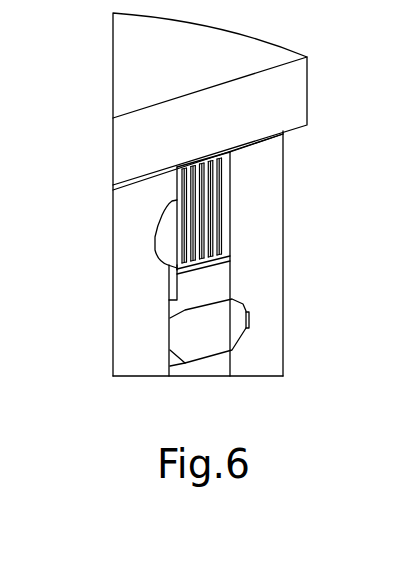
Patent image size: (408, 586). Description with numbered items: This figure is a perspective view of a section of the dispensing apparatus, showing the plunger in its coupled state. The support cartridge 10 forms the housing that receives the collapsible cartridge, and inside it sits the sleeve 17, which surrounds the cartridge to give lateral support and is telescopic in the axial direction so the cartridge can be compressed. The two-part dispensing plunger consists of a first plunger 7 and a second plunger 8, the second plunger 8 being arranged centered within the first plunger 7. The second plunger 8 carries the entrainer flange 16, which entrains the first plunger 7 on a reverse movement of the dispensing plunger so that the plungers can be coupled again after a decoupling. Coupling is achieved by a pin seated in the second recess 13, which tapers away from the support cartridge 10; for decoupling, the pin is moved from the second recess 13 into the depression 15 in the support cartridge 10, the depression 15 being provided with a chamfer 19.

The first plunger 7 is at (208, 376).
The second plunger 8 is at (120, 283).
The support cartridge 10 is at (285, 158).
The second recess 13 is at (155, 246).
The depression 15 is at (249, 315).
The entrainer flange 16 is at (173, 199).
The sleeve 17 is at (217, 212).
The chamfer 19 is at (248, 328).